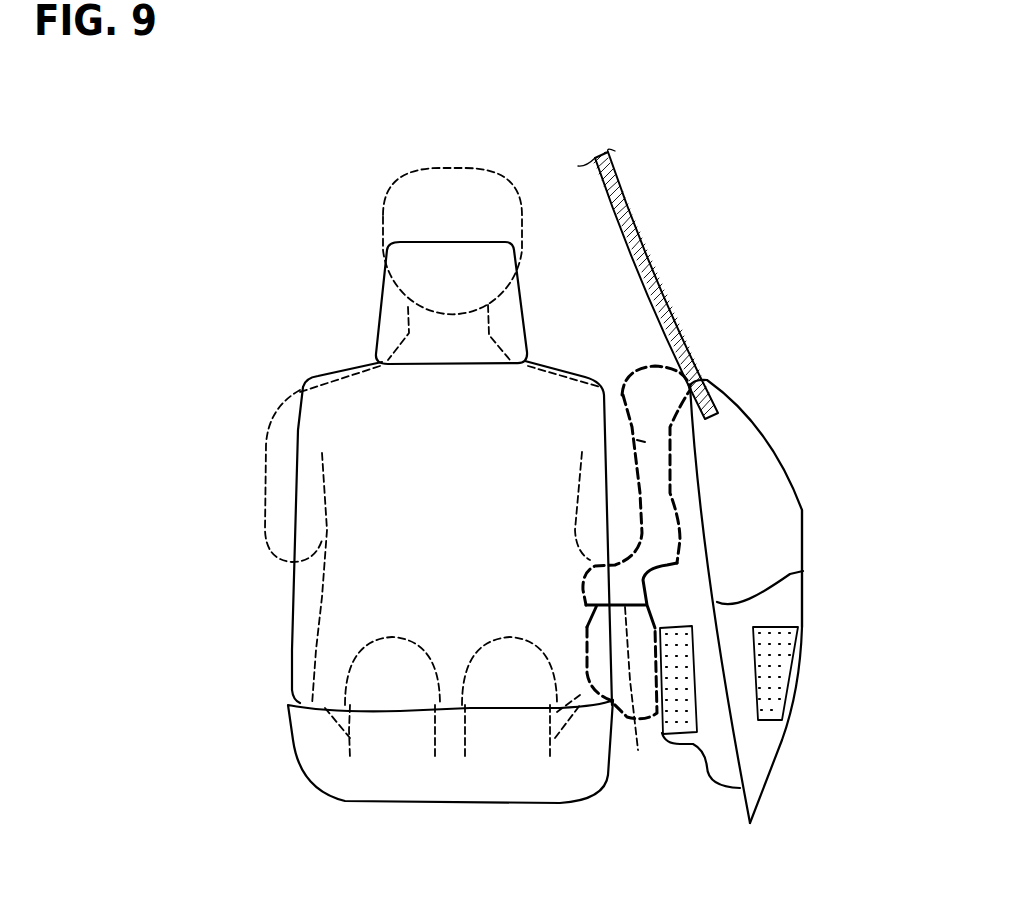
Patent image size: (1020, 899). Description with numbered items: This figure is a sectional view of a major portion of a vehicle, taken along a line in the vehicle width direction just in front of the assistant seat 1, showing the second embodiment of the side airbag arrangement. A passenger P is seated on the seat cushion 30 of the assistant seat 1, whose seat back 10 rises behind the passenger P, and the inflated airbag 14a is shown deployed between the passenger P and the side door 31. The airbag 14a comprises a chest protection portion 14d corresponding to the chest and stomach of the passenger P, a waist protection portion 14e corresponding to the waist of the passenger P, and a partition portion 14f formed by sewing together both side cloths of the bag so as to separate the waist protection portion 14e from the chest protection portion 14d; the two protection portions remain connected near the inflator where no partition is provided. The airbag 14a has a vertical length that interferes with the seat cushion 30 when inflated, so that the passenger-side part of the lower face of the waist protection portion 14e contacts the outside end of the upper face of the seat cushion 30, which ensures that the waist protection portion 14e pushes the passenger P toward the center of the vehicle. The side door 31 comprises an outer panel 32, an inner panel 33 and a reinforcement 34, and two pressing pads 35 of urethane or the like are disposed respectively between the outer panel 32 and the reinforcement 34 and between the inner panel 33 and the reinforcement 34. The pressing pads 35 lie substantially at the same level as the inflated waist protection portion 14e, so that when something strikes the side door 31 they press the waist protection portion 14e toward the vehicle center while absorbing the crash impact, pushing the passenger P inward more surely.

The passenger P is at (446, 170).
The assistant seat 1 is at (404, 564).
The seat back 10 is at (290, 607).
The seat cushion 30 is at (465, 805).
The airbag 14a is at (640, 360).
The chest protection portion 14d is at (647, 440).
The waist protection portion 14e is at (582, 607).
The partition portion 14f is at (627, 712).
The side door 31 is at (790, 426).
The outer panel 32 is at (802, 535).
The inner panel 33 is at (708, 782).
The reinforcement 34 is at (803, 571).
The pressing pad 35 is at (683, 708).